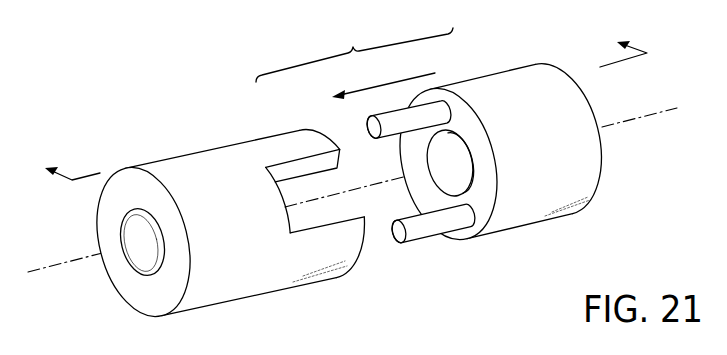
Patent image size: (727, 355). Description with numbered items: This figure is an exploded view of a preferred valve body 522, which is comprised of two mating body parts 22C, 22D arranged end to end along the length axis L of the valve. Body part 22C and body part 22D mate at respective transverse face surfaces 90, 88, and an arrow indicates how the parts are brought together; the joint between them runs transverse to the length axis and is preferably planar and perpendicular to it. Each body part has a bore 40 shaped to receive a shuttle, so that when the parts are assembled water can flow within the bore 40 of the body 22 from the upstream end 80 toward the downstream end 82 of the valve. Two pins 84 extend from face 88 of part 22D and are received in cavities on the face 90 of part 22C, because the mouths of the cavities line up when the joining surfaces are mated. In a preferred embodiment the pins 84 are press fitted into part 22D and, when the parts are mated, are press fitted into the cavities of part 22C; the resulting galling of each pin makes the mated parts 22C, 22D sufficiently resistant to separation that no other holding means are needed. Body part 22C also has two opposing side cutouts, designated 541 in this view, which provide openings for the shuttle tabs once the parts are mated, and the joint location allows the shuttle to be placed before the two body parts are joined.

The body 22 is at (333, 102).
The valve body 522 is at (354, 61).
The body part 22C is at (252, 296).
The body part 22D is at (520, 219).
The bore 40 is at (126, 237).
The downstream end 82 is at (119, 284).
The pins 84 is at (393, 138).
The transverse face surface 88 is at (420, 188).
The transverse face surface 90 is at (358, 248).
The slot 541 is at (338, 154).
The upstream end 80 is at (601, 177).
The longitudinal axis L is at (652, 116).